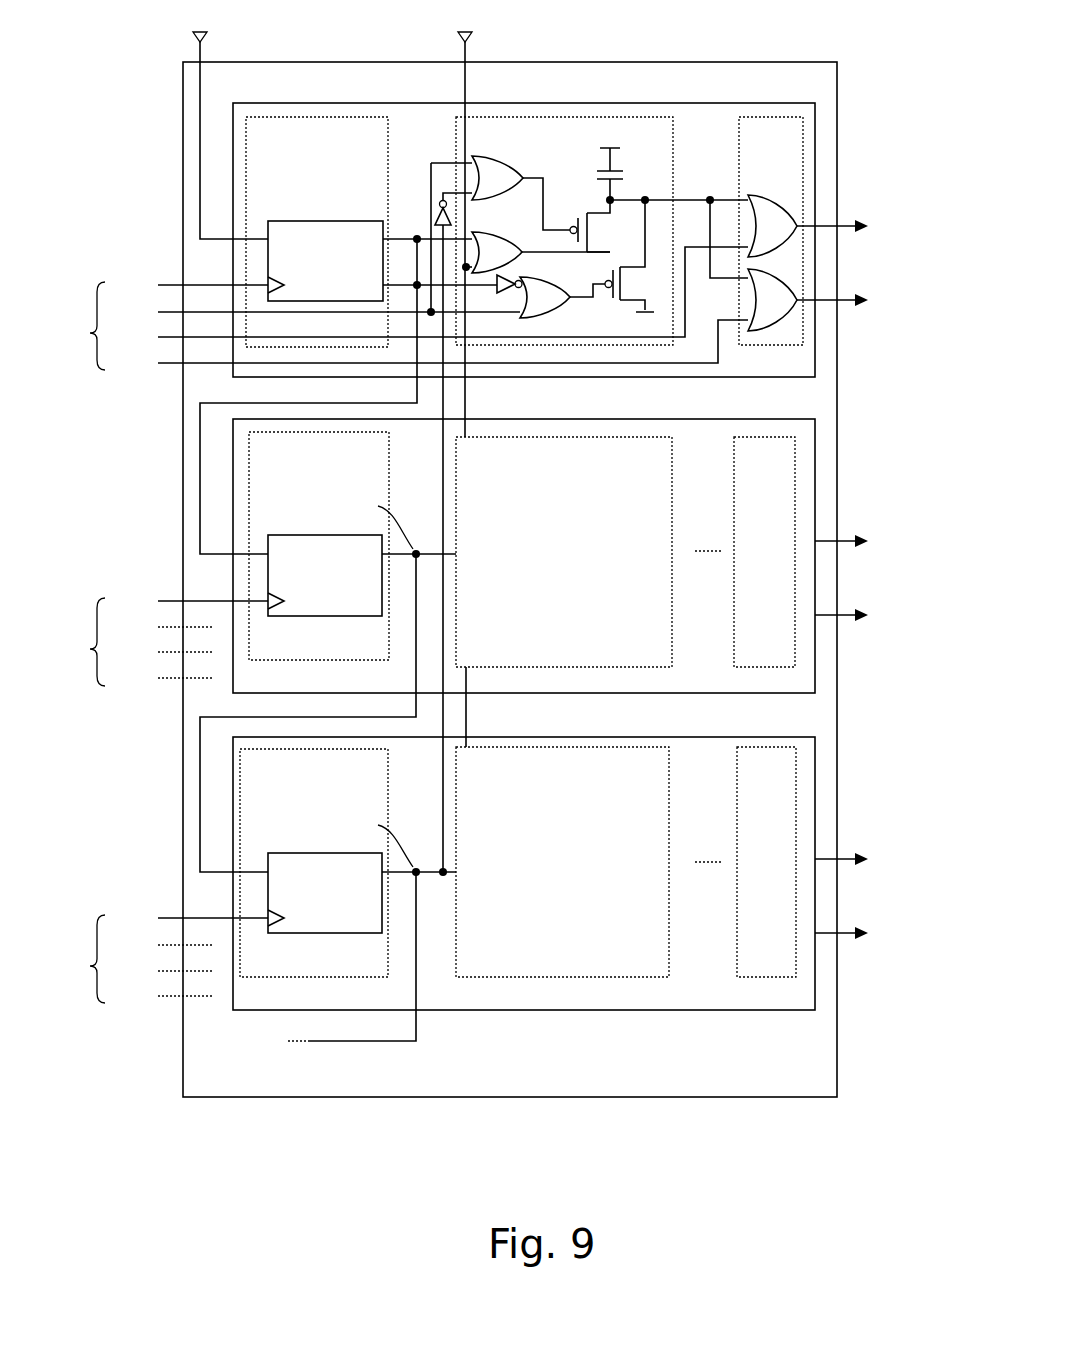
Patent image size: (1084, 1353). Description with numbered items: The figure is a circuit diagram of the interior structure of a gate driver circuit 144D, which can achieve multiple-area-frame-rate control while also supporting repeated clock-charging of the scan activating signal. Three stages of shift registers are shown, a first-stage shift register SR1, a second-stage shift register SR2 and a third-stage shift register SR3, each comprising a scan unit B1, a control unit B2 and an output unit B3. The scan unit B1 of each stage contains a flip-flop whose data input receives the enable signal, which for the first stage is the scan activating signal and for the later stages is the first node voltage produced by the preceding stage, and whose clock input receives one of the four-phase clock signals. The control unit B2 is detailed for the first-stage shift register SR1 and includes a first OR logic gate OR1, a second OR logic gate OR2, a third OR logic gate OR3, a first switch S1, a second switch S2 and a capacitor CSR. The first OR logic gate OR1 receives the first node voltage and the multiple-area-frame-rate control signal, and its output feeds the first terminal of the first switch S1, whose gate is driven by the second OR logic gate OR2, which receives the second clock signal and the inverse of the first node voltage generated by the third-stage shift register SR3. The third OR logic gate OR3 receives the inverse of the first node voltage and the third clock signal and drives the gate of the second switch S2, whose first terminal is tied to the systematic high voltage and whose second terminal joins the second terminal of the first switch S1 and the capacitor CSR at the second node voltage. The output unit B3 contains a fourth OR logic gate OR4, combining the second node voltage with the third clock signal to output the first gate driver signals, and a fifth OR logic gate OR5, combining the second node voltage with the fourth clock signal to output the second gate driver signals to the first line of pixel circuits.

The gate driver circuit 144D is at (780, 61).
The first-stage shift register SR1 is at (742, 103).
The second-stage shift register SR2 is at (748, 419).
The third-stage shift register SR3 is at (750, 737).
The scan unit B1 is at (414, 234).
The control unit B2 is at (605, 116).
The output unit B3 is at (710, 196).
The first OR logic gate OR1 is at (502, 227).
The second OR logic gate OR2 is at (520, 148).
The third OR logic gate OR3 is at (562, 272).
The fourth OR logic gate OR4 is at (786, 184).
The fifth OR logic gate OR5 is at (778, 333).
The first switch S1 is at (594, 226).
The second switch S2 is at (636, 267).
The capacitor CSR is at (594, 160).